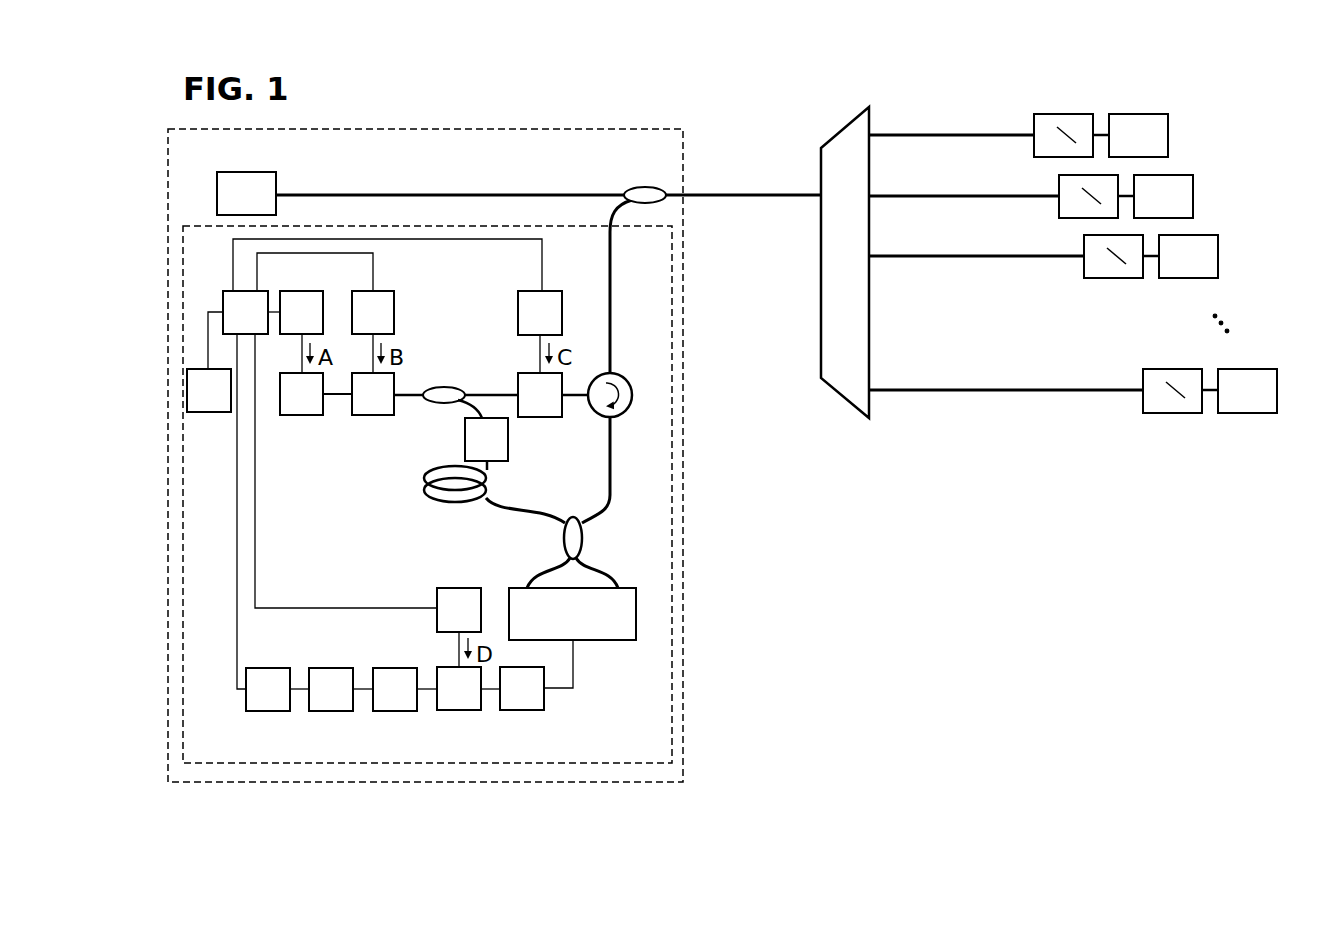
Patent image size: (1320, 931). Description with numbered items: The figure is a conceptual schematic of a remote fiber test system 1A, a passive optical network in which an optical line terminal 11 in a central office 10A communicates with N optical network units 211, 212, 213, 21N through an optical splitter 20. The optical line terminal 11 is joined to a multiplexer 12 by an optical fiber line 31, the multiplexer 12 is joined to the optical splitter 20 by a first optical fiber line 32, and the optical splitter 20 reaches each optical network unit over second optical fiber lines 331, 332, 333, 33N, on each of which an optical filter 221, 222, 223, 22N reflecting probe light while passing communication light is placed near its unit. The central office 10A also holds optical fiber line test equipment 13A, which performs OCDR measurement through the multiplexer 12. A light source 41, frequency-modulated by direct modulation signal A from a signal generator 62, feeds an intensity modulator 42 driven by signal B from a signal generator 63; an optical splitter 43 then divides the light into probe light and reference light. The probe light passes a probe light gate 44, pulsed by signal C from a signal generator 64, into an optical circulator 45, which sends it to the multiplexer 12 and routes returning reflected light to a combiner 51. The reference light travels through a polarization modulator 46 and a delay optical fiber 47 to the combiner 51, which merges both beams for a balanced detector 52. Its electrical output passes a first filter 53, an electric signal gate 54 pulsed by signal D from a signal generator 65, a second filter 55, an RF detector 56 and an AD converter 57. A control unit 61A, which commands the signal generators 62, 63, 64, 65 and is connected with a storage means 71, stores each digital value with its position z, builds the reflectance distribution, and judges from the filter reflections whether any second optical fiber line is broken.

The remote fiber test system 1A is at (1118, 668).
The central office 10A is at (636, 130).
The optical line terminal 11 is at (250, 172).
The multiplexer 12 is at (645, 187).
The optical fiber line test equipment 13A is at (672, 262).
The optical splitter 20 is at (838, 134).
The optical network unit 211 is at (1168, 144).
The optical network unit 212 is at (1193, 205).
The optical network unit 213 is at (1218, 265).
The optical network unit 21N is at (1255, 413).
The optical filter 221 is at (1034, 122).
The optical filter 222 is at (1059, 183).
The optical filter 223 is at (1084, 243).
The optical filter 22N is at (1178, 413).
The optical fiber line 31 is at (515, 195).
The first optical fiber line 32 is at (742, 195).
The second optical fiber line 331 is at (923, 134).
The second optical fiber line 332 is at (923, 195).
The second optical fiber line 333 is at (923, 255).
The second optical fiber line 33N is at (923, 389).
The light source 41 is at (308, 415).
The intensity modulator 42 is at (380, 415).
The optical splitter 43 is at (444, 388).
The probe light gate 44 is at (518, 376).
The optical circulator 45 is at (636, 372).
The polarization modulator 46 is at (508, 445).
The delay optical fiber 47 is at (442, 508).
The combiner 51 is at (582, 540).
The balanced detector 52 is at (618, 640).
The first filter 53 is at (522, 710).
The electric signal gate 54 is at (459, 710).
The second filter 55 is at (395, 711).
The RF detector 56 is at (332, 711).
The AD converter 57 is at (270, 711).
The control unit 61A is at (230, 291).
The signal generator 62 is at (308, 291).
The signal generator 63 is at (382, 291).
The signal generator 64 is at (554, 291).
The signal generator 65 is at (465, 588).
The storage means 71 is at (212, 412).